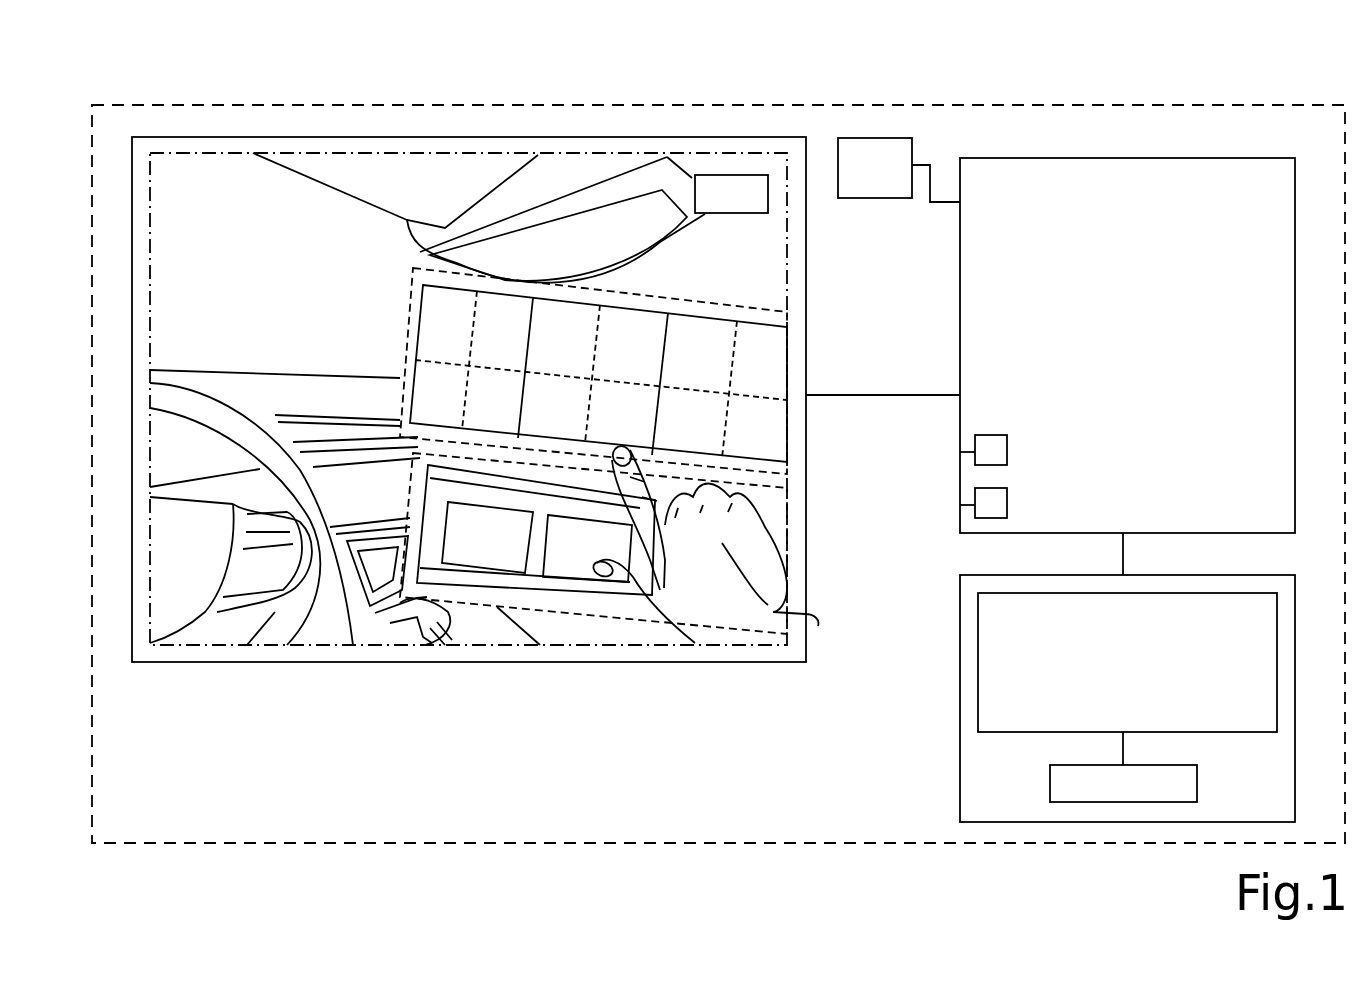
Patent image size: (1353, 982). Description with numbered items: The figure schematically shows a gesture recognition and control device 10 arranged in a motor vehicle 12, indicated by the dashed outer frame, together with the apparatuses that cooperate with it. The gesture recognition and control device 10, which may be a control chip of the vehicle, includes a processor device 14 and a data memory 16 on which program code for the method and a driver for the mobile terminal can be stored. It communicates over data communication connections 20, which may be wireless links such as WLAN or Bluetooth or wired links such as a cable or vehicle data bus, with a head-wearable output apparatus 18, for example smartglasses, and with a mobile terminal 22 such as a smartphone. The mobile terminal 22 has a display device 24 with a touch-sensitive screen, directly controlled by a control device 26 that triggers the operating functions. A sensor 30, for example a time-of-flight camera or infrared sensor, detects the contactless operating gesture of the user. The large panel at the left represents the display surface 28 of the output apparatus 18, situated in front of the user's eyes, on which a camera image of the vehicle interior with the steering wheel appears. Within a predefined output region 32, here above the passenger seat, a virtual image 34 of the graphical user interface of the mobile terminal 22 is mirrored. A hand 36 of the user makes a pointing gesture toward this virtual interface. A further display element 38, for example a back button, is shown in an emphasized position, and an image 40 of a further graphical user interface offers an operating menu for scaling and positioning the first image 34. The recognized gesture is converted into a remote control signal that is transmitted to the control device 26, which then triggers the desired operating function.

The gesture recognition and control device 10 is at (960, 302).
The motor vehicle 12 is at (614, 105).
The processor device 14 is at (960, 452).
The data memory 16 is at (960, 505).
The output apparatus 18 is at (320, 662).
The data communication connection 20 is at (923, 165).
The mobile terminal 22 is at (960, 708).
The display device 24 is at (978, 612).
The control device 26 is at (1050, 783).
The display surface 28 is at (806, 495).
The sensor 30 is at (877, 138).
The output region 32 is at (404, 352).
The virtual image 34 is at (410, 307).
The hand 36 is at (806, 612).
The display element 38 is at (734, 175).
The image of a further graphical user interface 40 is at (553, 597).